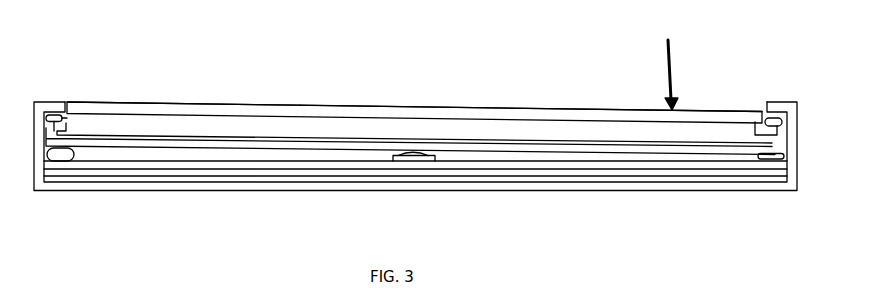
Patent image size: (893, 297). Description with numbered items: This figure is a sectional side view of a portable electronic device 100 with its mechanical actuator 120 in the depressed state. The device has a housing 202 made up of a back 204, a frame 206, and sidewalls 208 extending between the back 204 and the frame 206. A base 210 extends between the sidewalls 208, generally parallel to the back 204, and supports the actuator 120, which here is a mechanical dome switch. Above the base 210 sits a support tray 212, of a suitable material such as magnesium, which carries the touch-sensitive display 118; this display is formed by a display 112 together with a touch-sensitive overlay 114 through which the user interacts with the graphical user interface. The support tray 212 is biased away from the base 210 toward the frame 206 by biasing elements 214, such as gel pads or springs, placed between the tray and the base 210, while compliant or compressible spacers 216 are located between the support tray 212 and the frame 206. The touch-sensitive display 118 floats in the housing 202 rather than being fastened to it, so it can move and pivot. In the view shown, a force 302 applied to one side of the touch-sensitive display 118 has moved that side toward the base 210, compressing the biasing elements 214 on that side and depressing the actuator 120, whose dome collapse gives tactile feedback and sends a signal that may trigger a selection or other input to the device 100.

The portable electronic device 100 is at (592, 69).
The display 112 is at (363, 116).
The touch-sensitive overlay 114 is at (458, 108).
The touch-sensitive display 118 is at (296, 104).
The actuator 120 is at (408, 161).
The housing 202 is at (583, 190).
The back 204 is at (508, 184).
The frame 206 is at (44, 103).
The sidewalls 208 is at (797, 191).
The base 210 is at (290, 165).
The support tray 212 is at (221, 145).
The biasing elements 214 is at (759, 157).
The compliant or compressible spacers 216 is at (777, 118).
The force 302 is at (676, 66).